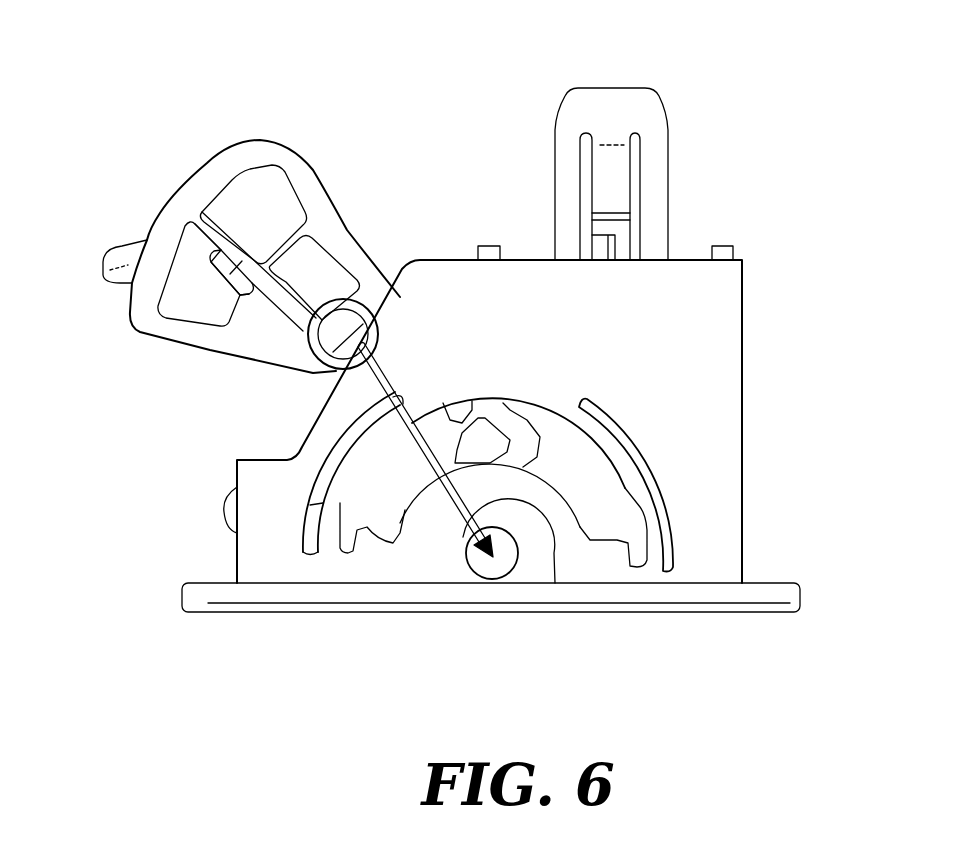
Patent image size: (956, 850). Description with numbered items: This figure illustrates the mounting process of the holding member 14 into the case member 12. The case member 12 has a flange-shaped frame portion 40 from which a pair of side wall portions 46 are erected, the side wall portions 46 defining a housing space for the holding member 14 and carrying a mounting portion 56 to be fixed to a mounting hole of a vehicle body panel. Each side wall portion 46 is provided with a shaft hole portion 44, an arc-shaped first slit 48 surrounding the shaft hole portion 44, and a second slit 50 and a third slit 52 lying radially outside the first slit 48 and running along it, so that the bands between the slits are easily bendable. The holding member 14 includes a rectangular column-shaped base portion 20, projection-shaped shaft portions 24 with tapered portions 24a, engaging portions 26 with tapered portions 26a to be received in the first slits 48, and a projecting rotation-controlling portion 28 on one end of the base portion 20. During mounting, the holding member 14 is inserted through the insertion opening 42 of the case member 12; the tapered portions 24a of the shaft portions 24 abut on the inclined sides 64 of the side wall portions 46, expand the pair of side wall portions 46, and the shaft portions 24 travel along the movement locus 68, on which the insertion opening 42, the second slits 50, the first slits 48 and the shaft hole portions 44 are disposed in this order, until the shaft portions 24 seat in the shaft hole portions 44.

The case member 12 is at (722, 432).
The holding member 14 is at (276, 137).
The base portion 20 is at (322, 200).
The shaft portions 24 is at (328, 332).
The tapered portion 24a is at (346, 354).
The engaging portions 26 is at (227, 257).
The tapered portion 26a is at (237, 290).
The rotation-controlling portion 28 is at (103, 257).
The frame portion 40 is at (248, 612).
The insertion opening 42 is at (410, 270).
The shaft hole portions 44 is at (518, 566).
The side wall portions 46 is at (686, 312).
The first slits 48 is at (400, 530).
The second slits 50 is at (310, 480).
The third slits 52 is at (683, 531).
The mounting portion 56 is at (611, 100).
The inclined sides 64 is at (302, 432).
The movement locus 68 is at (548, 555).